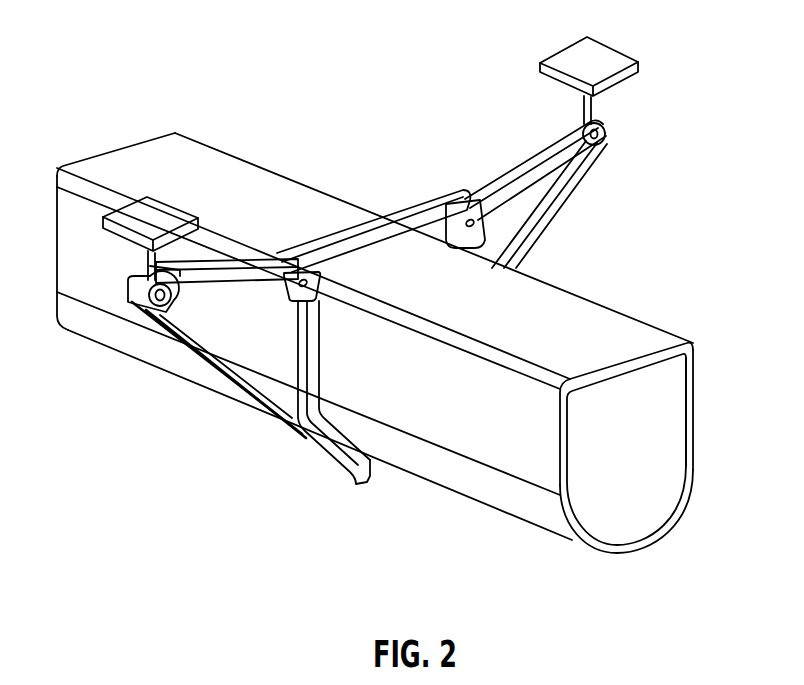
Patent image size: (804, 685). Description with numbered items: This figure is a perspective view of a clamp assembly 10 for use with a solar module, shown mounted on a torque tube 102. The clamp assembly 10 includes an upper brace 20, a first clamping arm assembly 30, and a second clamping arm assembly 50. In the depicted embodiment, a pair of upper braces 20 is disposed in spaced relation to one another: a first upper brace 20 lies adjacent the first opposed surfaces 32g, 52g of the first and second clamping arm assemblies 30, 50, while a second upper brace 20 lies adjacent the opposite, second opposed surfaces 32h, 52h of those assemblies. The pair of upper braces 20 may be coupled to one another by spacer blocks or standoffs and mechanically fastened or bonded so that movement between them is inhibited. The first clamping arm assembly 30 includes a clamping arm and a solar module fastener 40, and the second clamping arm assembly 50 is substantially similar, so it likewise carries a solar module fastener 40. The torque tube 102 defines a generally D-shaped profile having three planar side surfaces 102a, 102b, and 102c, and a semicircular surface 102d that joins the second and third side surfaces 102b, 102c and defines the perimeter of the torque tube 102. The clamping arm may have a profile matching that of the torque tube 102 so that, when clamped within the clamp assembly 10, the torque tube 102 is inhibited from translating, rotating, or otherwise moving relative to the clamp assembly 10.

The clamp assembly 10 is at (240, 532).
The upper brace 20 is at (426, 196).
The first clamping arm assembly 30 is at (194, 360).
The first opposed surface 32g is at (232, 276).
The second opposed surface 32h is at (300, 440).
The solar module fastener 40 is at (140, 200).
The second clamping arm assembly 50 is at (694, 207).
The first opposed surface 52g is at (553, 135).
The second opposed surface 52h is at (503, 167).
The torque tube 102 is at (700, 444).
The first side surface 102a is at (582, 348).
The second side surface 102b is at (482, 411).
The third side surface 102c is at (700, 452).
The semicircular surface 102d is at (637, 547).